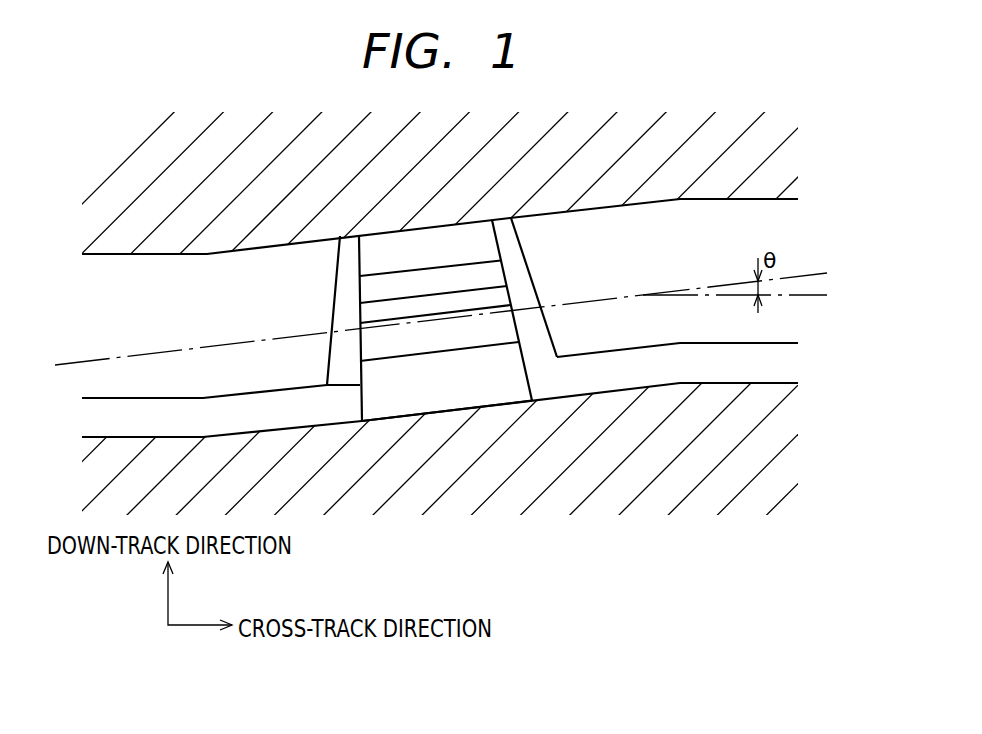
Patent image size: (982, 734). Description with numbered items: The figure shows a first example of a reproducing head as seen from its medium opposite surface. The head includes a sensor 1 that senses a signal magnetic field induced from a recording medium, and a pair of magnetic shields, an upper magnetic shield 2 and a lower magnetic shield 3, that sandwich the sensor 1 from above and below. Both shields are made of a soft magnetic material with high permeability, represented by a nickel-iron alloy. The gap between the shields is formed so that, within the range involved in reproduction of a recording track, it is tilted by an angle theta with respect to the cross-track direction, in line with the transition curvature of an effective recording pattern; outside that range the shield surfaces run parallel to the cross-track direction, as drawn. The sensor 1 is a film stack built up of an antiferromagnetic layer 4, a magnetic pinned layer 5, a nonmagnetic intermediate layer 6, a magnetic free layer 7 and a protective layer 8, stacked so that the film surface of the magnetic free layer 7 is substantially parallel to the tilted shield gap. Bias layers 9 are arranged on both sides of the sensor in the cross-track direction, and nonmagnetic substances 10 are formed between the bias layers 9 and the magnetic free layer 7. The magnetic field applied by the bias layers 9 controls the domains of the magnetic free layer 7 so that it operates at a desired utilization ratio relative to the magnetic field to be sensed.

The sensor 1 is at (544, 319).
The upper magnetic shield 2 is at (763, 163).
The lower magnetic shield 3 is at (760, 462).
The antiferromagnetic layer 4 is at (495, 375).
The magnetic pinned layer 5 is at (502, 328).
The nonmagnetic intermediate layer 6 is at (495, 298).
The magnetic free layer 7 is at (485, 273).
The protective layer 8 is at (478, 248).
The bias layers 9 is at (123, 330).
The nonmagnetic substances 10 is at (123, 417).